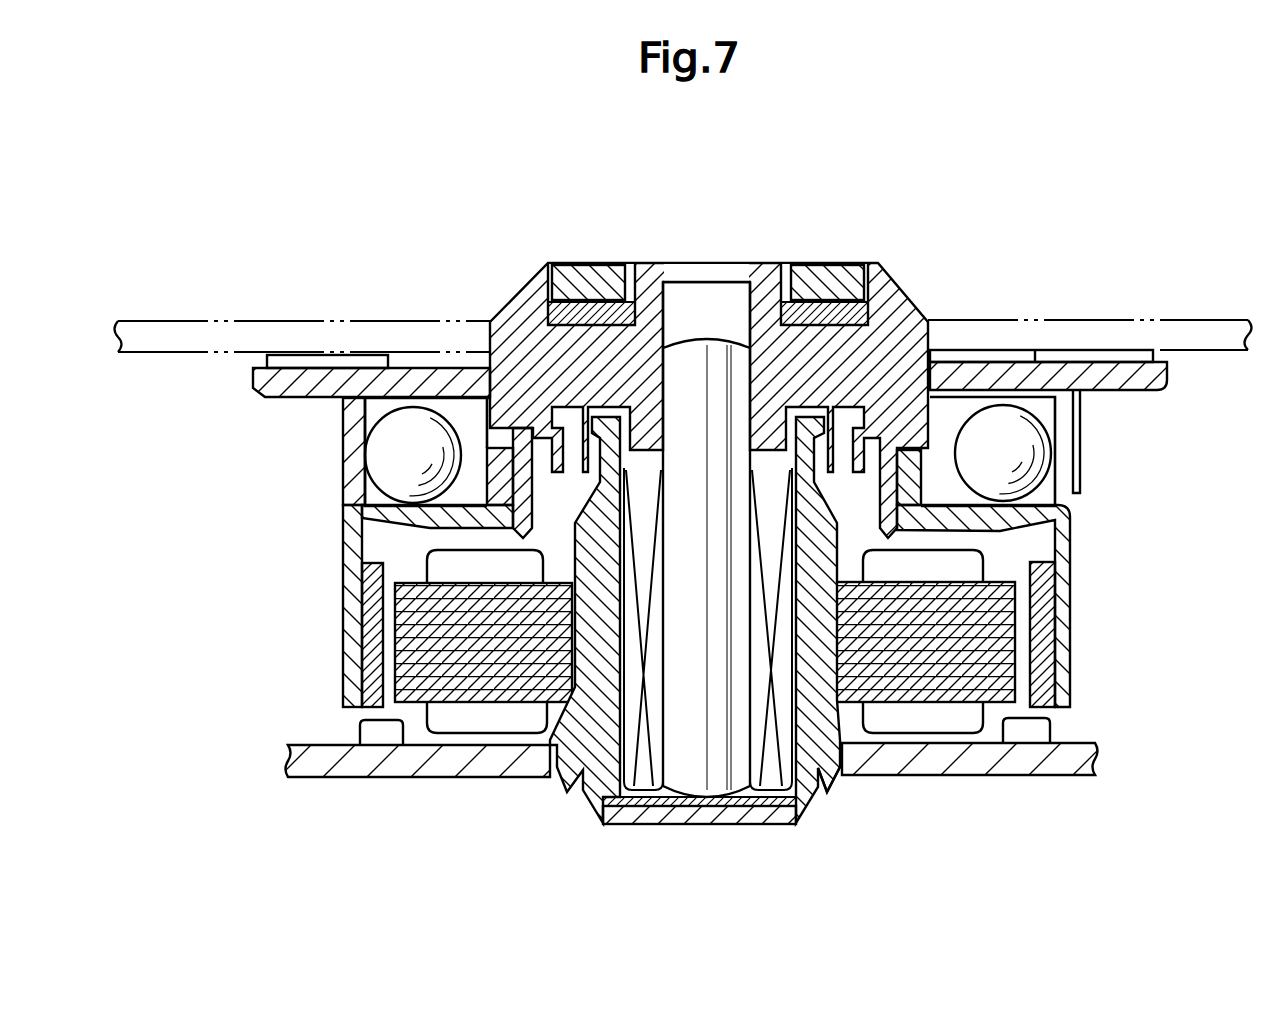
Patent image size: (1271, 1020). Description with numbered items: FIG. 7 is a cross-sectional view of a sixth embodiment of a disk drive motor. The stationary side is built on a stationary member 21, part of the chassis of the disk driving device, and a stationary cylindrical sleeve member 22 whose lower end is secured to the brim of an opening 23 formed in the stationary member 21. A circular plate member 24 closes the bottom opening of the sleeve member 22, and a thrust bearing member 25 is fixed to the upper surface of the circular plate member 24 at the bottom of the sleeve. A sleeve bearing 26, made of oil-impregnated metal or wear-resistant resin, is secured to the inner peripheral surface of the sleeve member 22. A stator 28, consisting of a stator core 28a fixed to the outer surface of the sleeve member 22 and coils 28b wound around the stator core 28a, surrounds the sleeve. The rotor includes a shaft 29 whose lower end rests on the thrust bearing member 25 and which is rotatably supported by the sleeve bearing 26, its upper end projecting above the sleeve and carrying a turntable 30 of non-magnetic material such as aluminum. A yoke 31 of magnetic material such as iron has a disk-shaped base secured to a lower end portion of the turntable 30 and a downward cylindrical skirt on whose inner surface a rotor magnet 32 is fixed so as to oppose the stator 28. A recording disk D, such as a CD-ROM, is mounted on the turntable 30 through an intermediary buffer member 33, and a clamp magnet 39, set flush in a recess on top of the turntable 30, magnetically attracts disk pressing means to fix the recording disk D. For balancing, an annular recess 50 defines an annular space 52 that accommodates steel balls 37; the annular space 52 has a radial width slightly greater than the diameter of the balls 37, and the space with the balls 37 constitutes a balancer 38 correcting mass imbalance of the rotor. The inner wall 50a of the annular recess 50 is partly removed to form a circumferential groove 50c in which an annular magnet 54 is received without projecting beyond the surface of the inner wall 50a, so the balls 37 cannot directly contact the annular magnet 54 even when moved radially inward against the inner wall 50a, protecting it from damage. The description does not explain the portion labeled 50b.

The stationary member 21 is at (352, 768).
The sleeve member 22 is at (563, 760).
The opening 23 is at (823, 773).
The circular plate member 24 is at (667, 813).
The thrust bearing member 25 is at (772, 803).
The sleeve bearing 26 is at (640, 778).
The stator 28 is at (420, 572).
The stator core 28a is at (405, 647).
The coils 28b is at (442, 723).
The shaft 29 is at (697, 350).
The turntable 30 is at (888, 282).
The yoke 31 is at (1072, 603).
The rotor magnet 32 is at (1070, 690).
The buffer member 33 is at (293, 355).
The balls 37 is at (385, 472).
The balancer 38 is at (357, 450).
The clamp magnet 39 is at (587, 272).
The annular recess 50 is at (460, 410).
The inner wall 50a is at (957, 433).
The engaging portion 50b is at (1083, 420).
The circumferential groove 50c is at (917, 467).
The annular space 52 is at (375, 410).
The annular magnet 54 is at (1065, 527).
The recording disk D is at (350, 327).